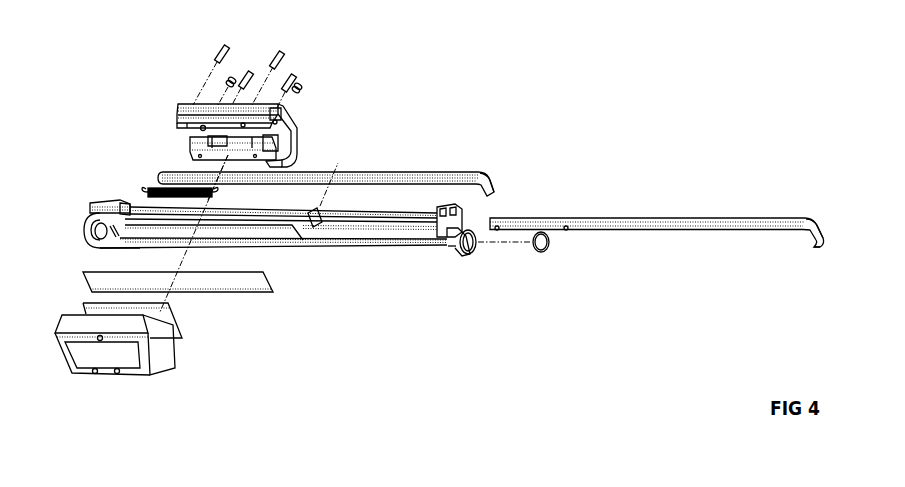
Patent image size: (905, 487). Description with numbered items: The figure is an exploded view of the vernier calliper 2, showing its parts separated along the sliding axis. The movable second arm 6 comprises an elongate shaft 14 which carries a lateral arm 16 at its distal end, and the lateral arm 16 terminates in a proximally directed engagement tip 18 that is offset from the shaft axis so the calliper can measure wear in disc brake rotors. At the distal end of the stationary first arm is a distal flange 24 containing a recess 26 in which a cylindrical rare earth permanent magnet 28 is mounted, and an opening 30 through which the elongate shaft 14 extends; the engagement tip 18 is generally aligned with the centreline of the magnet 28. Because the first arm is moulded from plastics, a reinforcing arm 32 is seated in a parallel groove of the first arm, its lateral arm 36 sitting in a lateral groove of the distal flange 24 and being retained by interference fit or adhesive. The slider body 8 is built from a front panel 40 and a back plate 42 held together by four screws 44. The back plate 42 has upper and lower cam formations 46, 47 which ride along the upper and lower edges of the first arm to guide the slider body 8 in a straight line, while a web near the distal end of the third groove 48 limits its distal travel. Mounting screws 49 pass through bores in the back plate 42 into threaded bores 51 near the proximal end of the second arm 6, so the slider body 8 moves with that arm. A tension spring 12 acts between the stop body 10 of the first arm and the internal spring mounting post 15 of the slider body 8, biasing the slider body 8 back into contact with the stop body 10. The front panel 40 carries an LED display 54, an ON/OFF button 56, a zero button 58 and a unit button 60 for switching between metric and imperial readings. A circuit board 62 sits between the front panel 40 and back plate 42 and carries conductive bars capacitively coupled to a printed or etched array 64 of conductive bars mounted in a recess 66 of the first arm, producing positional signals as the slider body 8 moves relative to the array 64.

The vernier calliper 2 is at (373, 250).
The second arm 6 is at (668, 234).
The slider body 8 is at (52, 337).
The stop body 10 is at (84, 230).
The tension spring 12 is at (138, 194).
The elongate shaft 14 is at (612, 218).
The internal spring mounting post 15 is at (282, 148).
The lateral arm 16 is at (818, 228).
The engagement tip 18 is at (818, 249).
The distal flange 24 is at (449, 240).
The recess 26 is at (470, 254).
The permanent magnet 28 is at (546, 257).
The opening 30 is at (465, 228).
The reinforcing arm 32 is at (376, 172).
The lateral arm 36 is at (493, 185).
The front panel 40 is at (63, 356).
The back plate 42 is at (297, 129).
The screws 44 is at (224, 45).
The upper cam formation 46 is at (180, 113).
The lower cam formation 47 is at (192, 147).
The third groove 48 is at (283, 112).
The mounting screws 49 is at (233, 78).
The threaded bores 51 is at (498, 230).
The LED display 54 is at (76, 366).
The ON/OFF button 56 is at (94, 372).
The zero button 58 is at (117, 373).
The unit button 60 is at (98, 337).
The circuit board 62 is at (170, 330).
The array of conductive bars 64 is at (82, 289).
The recess 66 is at (288, 233).